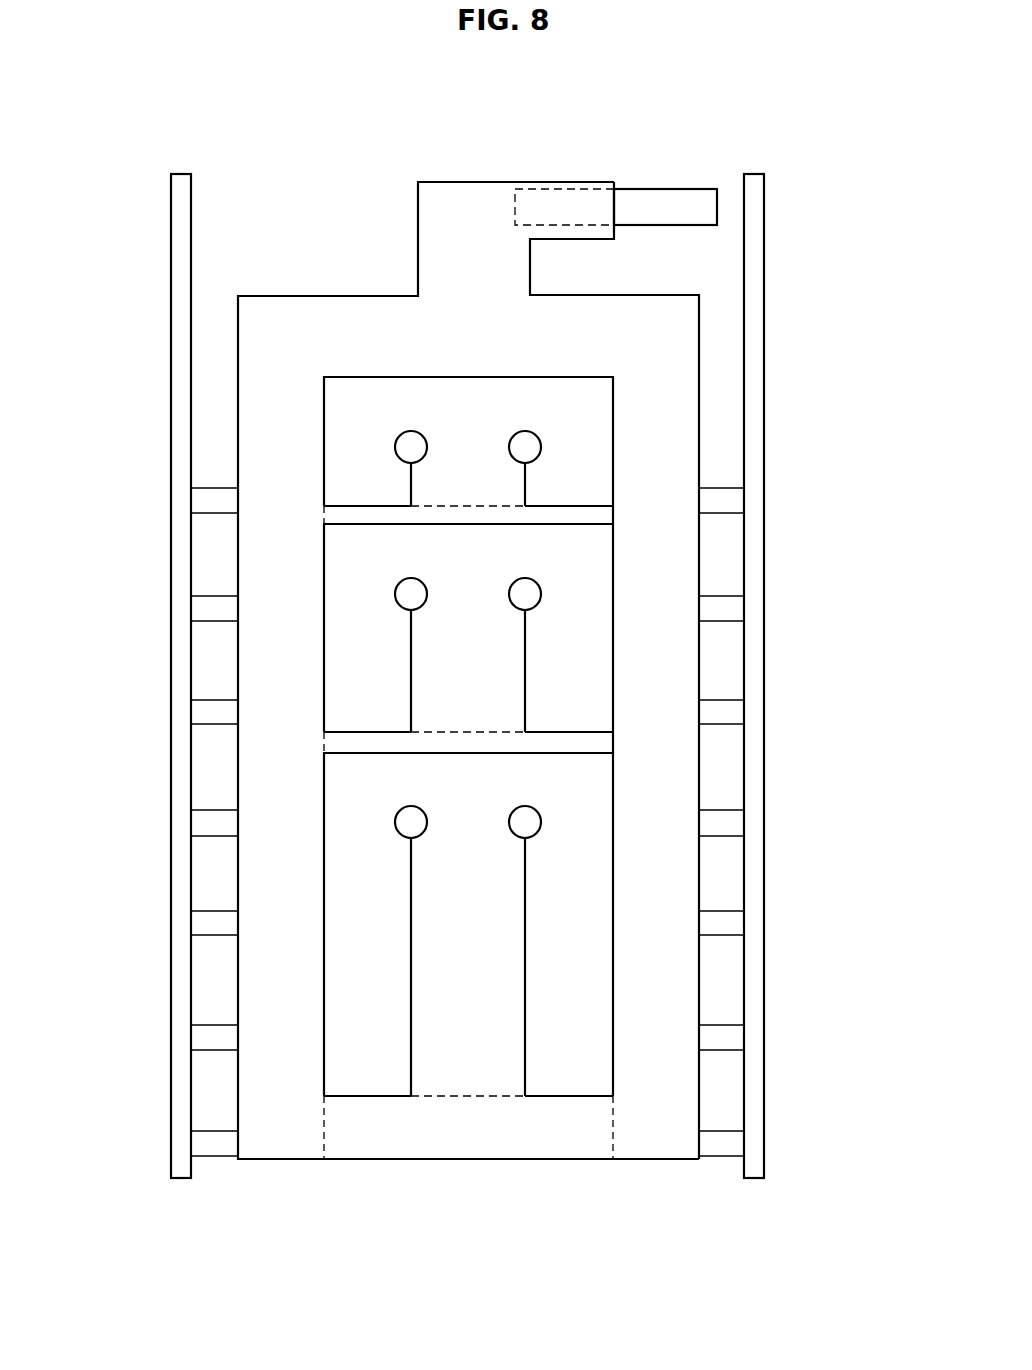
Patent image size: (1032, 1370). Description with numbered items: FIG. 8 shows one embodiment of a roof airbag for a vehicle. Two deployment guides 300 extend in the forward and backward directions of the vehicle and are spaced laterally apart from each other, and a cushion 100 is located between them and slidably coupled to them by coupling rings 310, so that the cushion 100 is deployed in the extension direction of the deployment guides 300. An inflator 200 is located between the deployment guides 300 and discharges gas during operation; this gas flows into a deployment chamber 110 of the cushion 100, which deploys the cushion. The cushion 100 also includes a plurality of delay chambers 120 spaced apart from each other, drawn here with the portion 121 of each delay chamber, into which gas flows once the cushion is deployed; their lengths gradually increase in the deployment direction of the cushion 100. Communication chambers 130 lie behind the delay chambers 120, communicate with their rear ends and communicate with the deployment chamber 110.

The cushion 100 is at (576, 722).
The deployment chamber 110 is at (662, 433).
The delay chamber 120 is at (325, 736).
The cell body 121 is at (355, 467).
The communication chamber 130 is at (588, 510).
The inflator 200 is at (665, 188).
The deployment guide 300 is at (764, 245).
The coupling ring 310 is at (215, 1156).